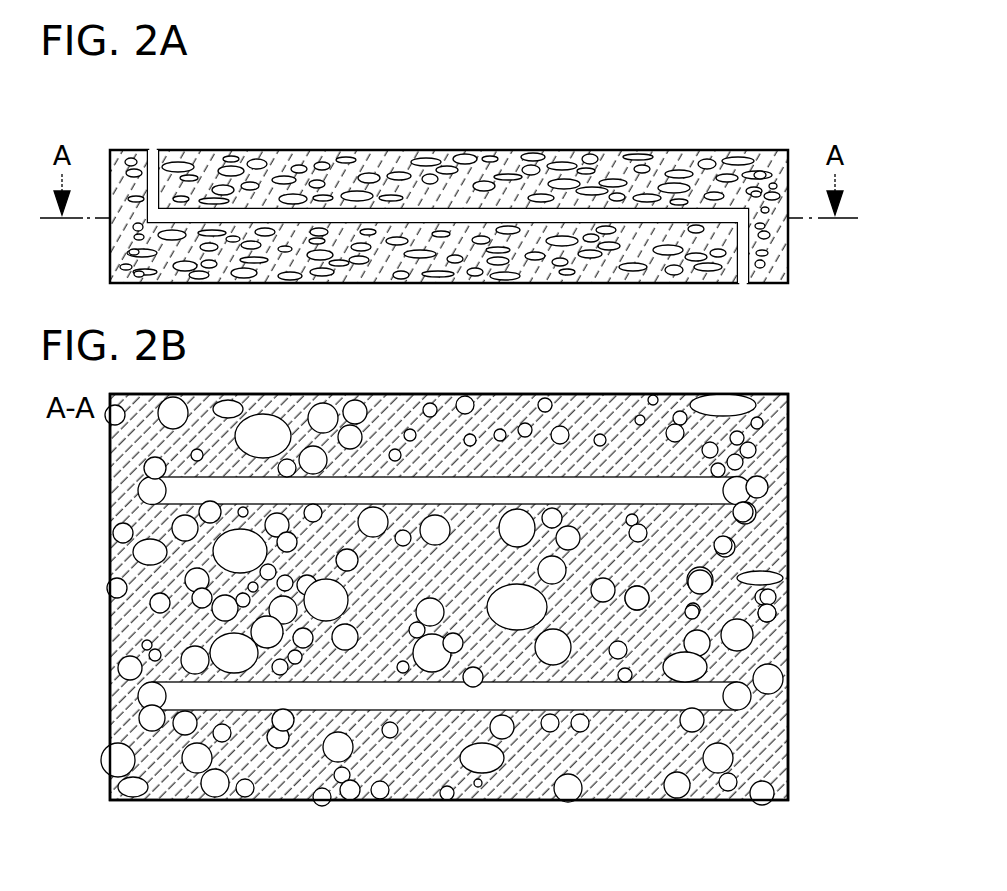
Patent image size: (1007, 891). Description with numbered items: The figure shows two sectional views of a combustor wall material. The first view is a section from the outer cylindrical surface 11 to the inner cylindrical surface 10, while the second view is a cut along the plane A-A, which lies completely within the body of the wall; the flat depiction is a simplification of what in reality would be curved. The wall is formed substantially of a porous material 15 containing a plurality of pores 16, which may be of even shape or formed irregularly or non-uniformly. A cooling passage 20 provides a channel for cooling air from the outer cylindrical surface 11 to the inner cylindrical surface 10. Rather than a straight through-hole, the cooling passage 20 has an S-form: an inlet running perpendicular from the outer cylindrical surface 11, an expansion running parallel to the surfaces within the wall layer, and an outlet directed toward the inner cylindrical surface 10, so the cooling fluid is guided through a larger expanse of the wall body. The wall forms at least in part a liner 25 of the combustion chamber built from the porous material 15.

In FIG. 2A, the inner cylindrical surface 10 is at (699, 300).
In FIG. 2A, the outer cylindrical surface 11 is at (668, 132).
In FIG. 2B, the porous material 15 is at (740, 575).
In FIG. 2A, the pores 16 is at (462, 180).
In FIG. 2B, the pores 16 is at (773, 680).
In FIG. 2A, the cooling passage 20 is at (310, 215).
In FIG. 2B, the cooling passage 20 is at (177, 490).
In FIG. 2B, the liner 25 is at (751, 844).